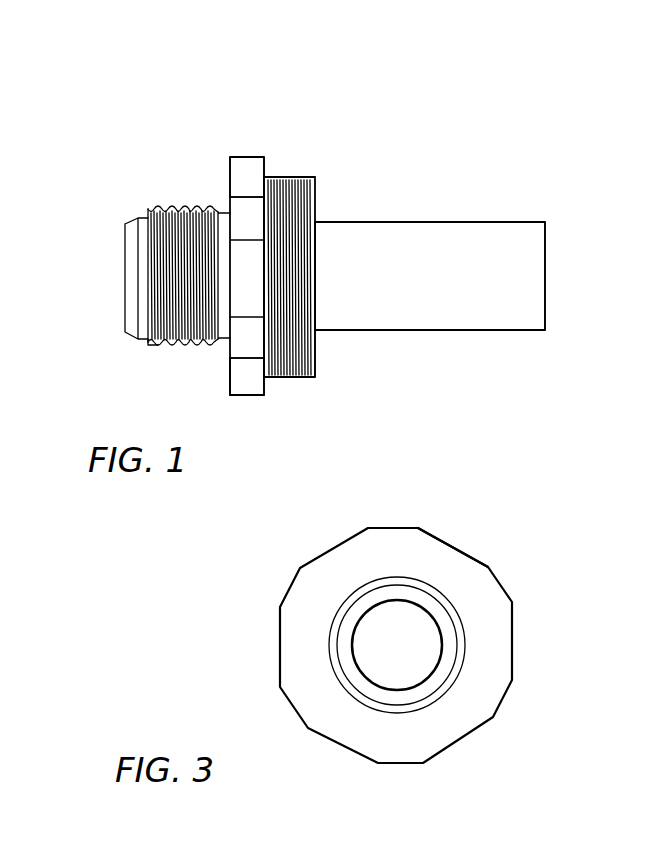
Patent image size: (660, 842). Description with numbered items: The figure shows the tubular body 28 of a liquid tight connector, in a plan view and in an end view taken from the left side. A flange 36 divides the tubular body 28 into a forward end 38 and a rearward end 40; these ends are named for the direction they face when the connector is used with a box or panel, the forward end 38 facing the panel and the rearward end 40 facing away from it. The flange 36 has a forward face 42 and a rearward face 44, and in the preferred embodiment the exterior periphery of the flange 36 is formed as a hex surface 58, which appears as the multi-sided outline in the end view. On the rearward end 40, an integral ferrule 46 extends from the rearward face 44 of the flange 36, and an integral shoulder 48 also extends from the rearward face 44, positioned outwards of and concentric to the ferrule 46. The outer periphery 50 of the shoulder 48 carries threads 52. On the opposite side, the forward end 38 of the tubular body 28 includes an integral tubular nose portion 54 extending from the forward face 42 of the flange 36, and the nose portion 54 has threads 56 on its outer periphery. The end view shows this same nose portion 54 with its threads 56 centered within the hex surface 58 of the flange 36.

In FIG. 1, the tubular body 28 is at (478, 118).
In FIG. 3, the tubular body 28 is at (406, 498).
In FIG. 1, the flange 36 is at (245, 160).
In FIG. 3, the flange 36 is at (513, 653).
In FIG. 1, the forward end 38 is at (128, 277).
In FIG. 1, the rearward end 40 is at (547, 253).
In FIG. 1, the forward face 42 is at (222, 177).
In FIG. 3, the forward face 42 is at (425, 558).
In FIG. 1, the rearward face 44 is at (274, 387).
In FIG. 1, the ferrule 46 is at (407, 240).
In FIG. 1, the shoulder 48 is at (290, 178).
In FIG. 1, the outer periphery 50 is at (277, 178).
In FIG. 1, the threads 52 is at (307, 342).
In FIG. 1, the tubular nose portion 54 is at (150, 345).
In FIG. 3, the tubular nose portion 54 is at (435, 610).
In FIG. 1, the threads 56 is at (180, 347).
In FIG. 3, the threads 56 is at (340, 611).
In FIG. 1, the hex surface 58 is at (242, 377).